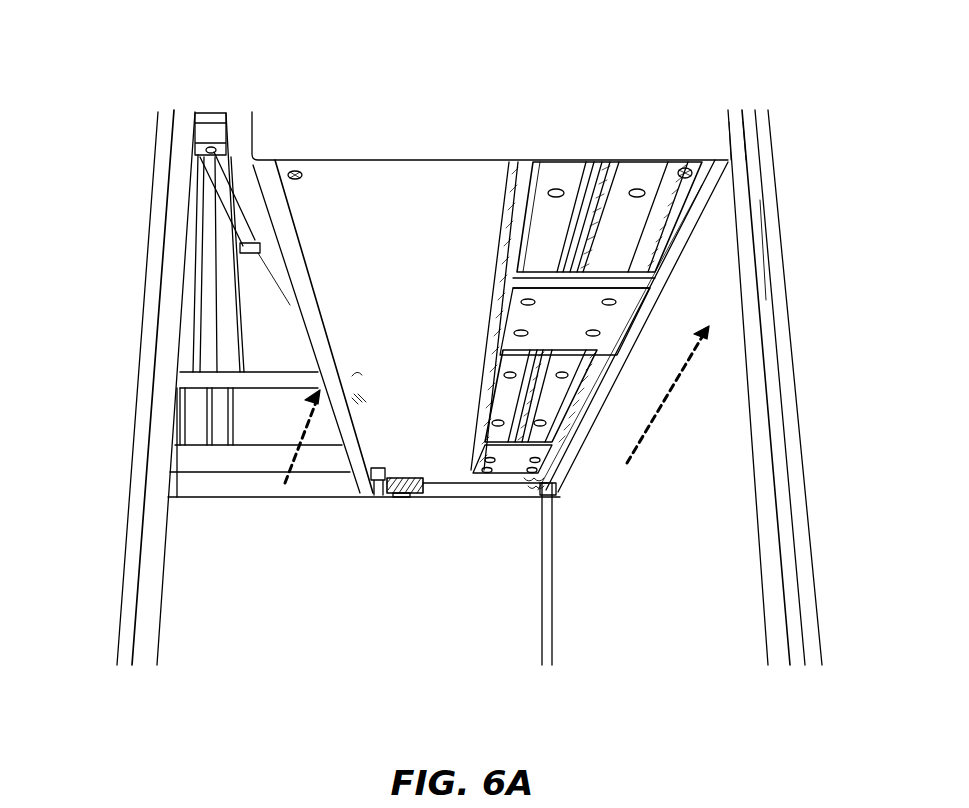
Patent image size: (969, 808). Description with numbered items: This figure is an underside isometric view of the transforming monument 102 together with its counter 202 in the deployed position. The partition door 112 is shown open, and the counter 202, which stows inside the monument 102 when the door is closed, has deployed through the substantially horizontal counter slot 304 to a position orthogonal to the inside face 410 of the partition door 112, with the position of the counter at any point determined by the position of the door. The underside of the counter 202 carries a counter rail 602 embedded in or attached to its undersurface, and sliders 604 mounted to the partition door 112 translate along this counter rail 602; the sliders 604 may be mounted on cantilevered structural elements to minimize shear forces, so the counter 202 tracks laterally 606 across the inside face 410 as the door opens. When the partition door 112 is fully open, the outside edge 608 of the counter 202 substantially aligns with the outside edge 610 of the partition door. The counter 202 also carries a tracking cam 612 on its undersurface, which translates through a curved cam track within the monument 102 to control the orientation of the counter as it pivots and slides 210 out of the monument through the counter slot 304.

The transforming monument 102 is at (138, 57).
The partition door 112 is at (635, 622).
The counter 202 is at (405, 180).
The counter deployment 210 is at (290, 457).
The counter slot 304 is at (237, 482).
The inside face 410 is at (725, 492).
The counter rail 602 is at (557, 228).
The slider 604 is at (557, 322).
The lateral tracking 606 is at (658, 410).
The outside edge of the counter 608 is at (698, 125).
The outside edge of the partition door 610 is at (767, 292).
The tracking cam 612 is at (401, 494).